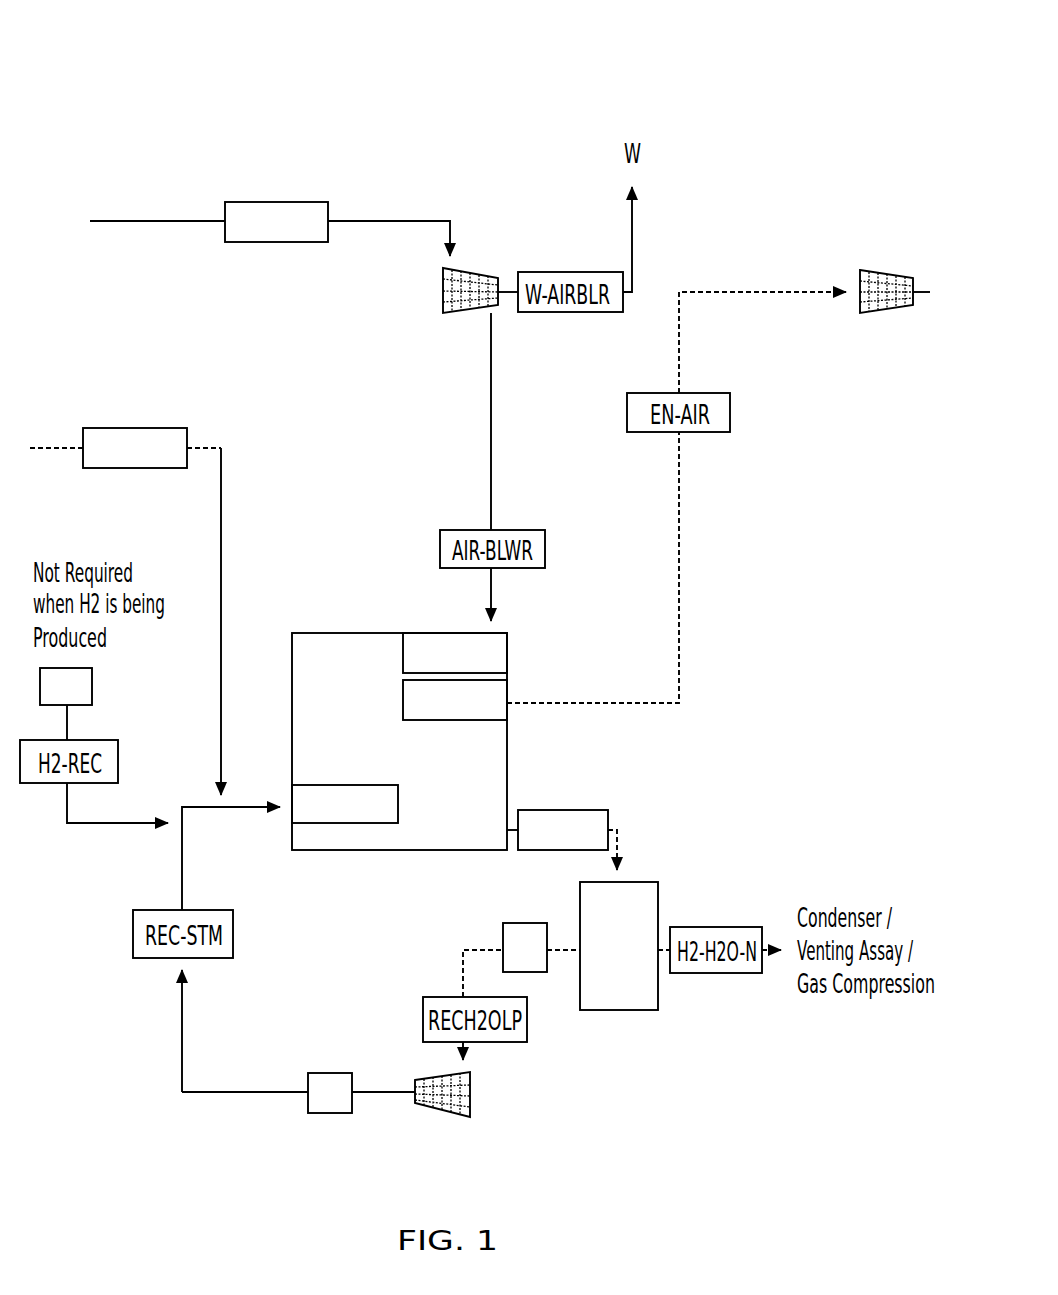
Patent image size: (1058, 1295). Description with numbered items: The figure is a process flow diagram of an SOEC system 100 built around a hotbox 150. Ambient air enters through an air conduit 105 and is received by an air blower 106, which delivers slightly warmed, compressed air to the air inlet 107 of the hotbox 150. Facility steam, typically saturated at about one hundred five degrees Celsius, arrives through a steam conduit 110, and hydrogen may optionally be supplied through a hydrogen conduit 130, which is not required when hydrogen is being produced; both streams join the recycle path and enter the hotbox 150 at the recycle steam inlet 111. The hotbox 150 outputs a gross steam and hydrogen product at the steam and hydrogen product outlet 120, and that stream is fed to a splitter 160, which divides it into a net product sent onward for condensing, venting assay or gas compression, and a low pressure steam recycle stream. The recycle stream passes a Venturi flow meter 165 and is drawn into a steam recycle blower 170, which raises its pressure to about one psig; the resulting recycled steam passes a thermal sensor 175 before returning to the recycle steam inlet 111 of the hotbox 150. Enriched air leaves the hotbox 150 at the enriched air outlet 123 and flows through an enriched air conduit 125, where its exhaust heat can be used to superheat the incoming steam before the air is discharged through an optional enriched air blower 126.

The SOEC system 100 is at (132, 74).
The air conduit 105 is at (330, 212).
The air blower 106 is at (473, 275).
The air inlet 107 is at (497, 658).
The steam conduit 110 is at (188, 443).
The recycle steam inlet 111 is at (297, 818).
The steam and hydrogen product outlet 120 is at (510, 825).
The enriched air outlet 123 is at (497, 700).
The enriched air conduit 125 is at (763, 285).
The enriched air blower 126 is at (877, 270).
The hydrogen conduit 130 is at (93, 687).
The hotbox 150 is at (290, 743).
The splitter 160 is at (660, 1002).
The Venturi flow meter 165 is at (522, 925).
The steam recycle blower 170 is at (472, 1094).
The thermal sensor 175 is at (332, 1073).